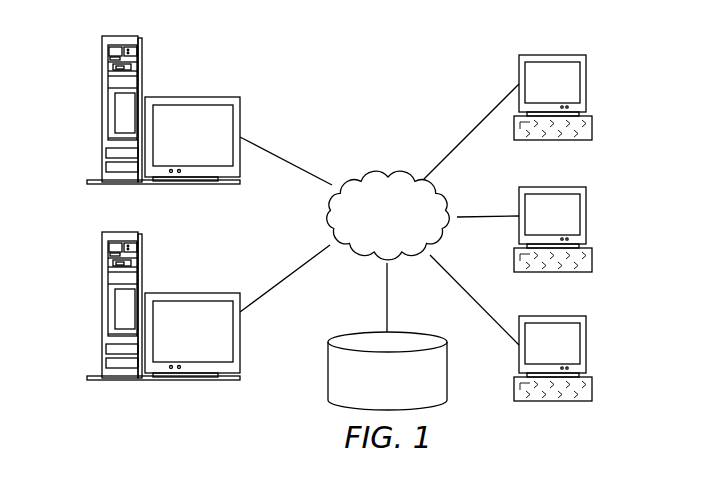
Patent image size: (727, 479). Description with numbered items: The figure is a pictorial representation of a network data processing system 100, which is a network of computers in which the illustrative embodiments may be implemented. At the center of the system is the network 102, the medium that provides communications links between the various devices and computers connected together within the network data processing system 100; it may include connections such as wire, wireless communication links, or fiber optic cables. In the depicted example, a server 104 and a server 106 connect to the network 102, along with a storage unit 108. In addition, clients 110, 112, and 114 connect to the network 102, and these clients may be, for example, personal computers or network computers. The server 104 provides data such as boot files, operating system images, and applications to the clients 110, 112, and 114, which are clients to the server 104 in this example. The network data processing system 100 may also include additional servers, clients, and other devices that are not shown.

The network data processing system 100 is at (437, 70).
The network 102 is at (360, 170).
The server 104 is at (102, 111).
The server 106 is at (102, 305).
The storage unit 108 is at (327, 380).
The client 110 is at (586, 83).
The client 112 is at (586, 216).
The client 114 is at (586, 345).